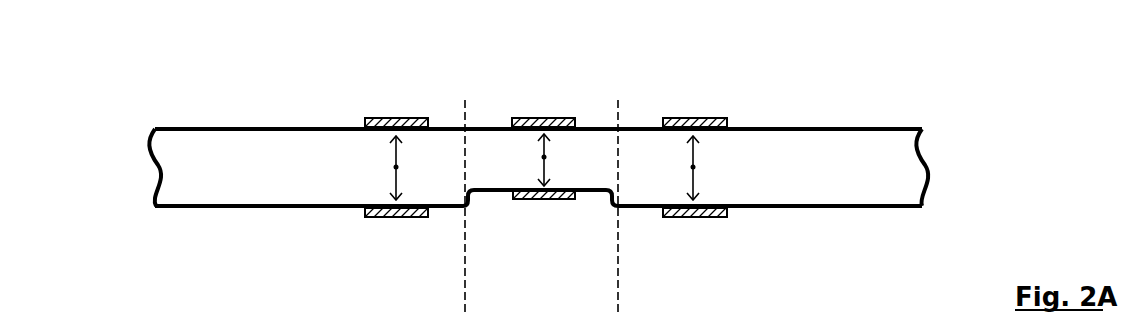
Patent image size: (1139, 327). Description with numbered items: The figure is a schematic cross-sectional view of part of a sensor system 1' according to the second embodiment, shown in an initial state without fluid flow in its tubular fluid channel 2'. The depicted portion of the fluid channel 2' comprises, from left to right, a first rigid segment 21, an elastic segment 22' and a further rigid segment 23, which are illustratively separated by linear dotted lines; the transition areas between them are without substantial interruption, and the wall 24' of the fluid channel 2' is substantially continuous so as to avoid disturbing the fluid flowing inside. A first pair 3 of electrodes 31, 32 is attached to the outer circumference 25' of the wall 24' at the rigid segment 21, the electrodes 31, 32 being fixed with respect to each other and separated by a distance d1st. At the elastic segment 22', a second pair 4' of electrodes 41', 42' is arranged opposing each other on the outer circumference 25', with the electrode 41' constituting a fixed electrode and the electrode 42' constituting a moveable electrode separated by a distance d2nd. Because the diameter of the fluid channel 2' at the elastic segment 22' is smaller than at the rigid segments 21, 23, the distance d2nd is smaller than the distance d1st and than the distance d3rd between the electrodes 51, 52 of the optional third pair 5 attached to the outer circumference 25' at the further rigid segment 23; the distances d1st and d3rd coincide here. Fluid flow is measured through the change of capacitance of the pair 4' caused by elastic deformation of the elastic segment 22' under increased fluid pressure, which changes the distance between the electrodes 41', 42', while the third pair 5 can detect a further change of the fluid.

The sensor system 1' is at (498, 161).
The fluid channel 2' is at (498, 166).
The rigid segment 21 is at (260, 207).
The elastic segment 22' is at (540, 221).
The further rigid segment 23 is at (799, 207).
The wall 24' is at (919, 243).
The outer circumference 25' is at (538, 91).
The first pair of electrodes 3 is at (340, 23).
The electrode 31 is at (365, 123).
The electrode 32 is at (363, 207).
The second pair of electrodes 4' is at (525, 118).
The fixed electrode 41' is at (530, 136).
The moveable electrode 42' is at (525, 119).
The third pair of electrodes 5 is at (640, 20).
The electrode 51 is at (665, 118).
The electrode 52 is at (665, 208).
The distance d1st is at (396, 167).
The distance d2nd is at (544, 157).
The distance d3rd is at (693, 167).